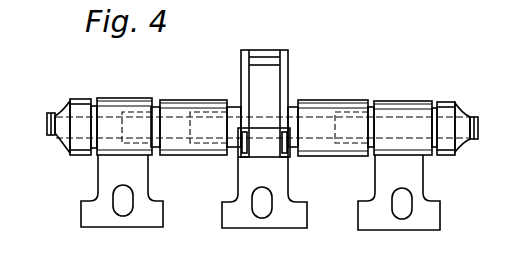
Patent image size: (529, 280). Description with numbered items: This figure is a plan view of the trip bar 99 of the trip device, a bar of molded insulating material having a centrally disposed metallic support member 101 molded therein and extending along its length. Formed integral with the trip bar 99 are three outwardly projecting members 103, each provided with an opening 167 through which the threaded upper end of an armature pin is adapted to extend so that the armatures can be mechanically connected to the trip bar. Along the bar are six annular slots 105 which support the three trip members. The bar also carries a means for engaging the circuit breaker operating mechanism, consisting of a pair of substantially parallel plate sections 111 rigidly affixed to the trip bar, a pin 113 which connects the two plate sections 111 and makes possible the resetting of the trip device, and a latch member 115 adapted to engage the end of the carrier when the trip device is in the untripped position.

The trip bar 99 is at (263, 112).
The metallic support member 101 is at (478, 120).
The outwardly projecting member 103 is at (155, 228).
The annular slot 105 is at (93, 100).
The plate section 111 is at (241, 68).
The pin 113 is at (263, 52).
The latch member 115 is at (268, 150).
The opening 167 is at (438, 185).